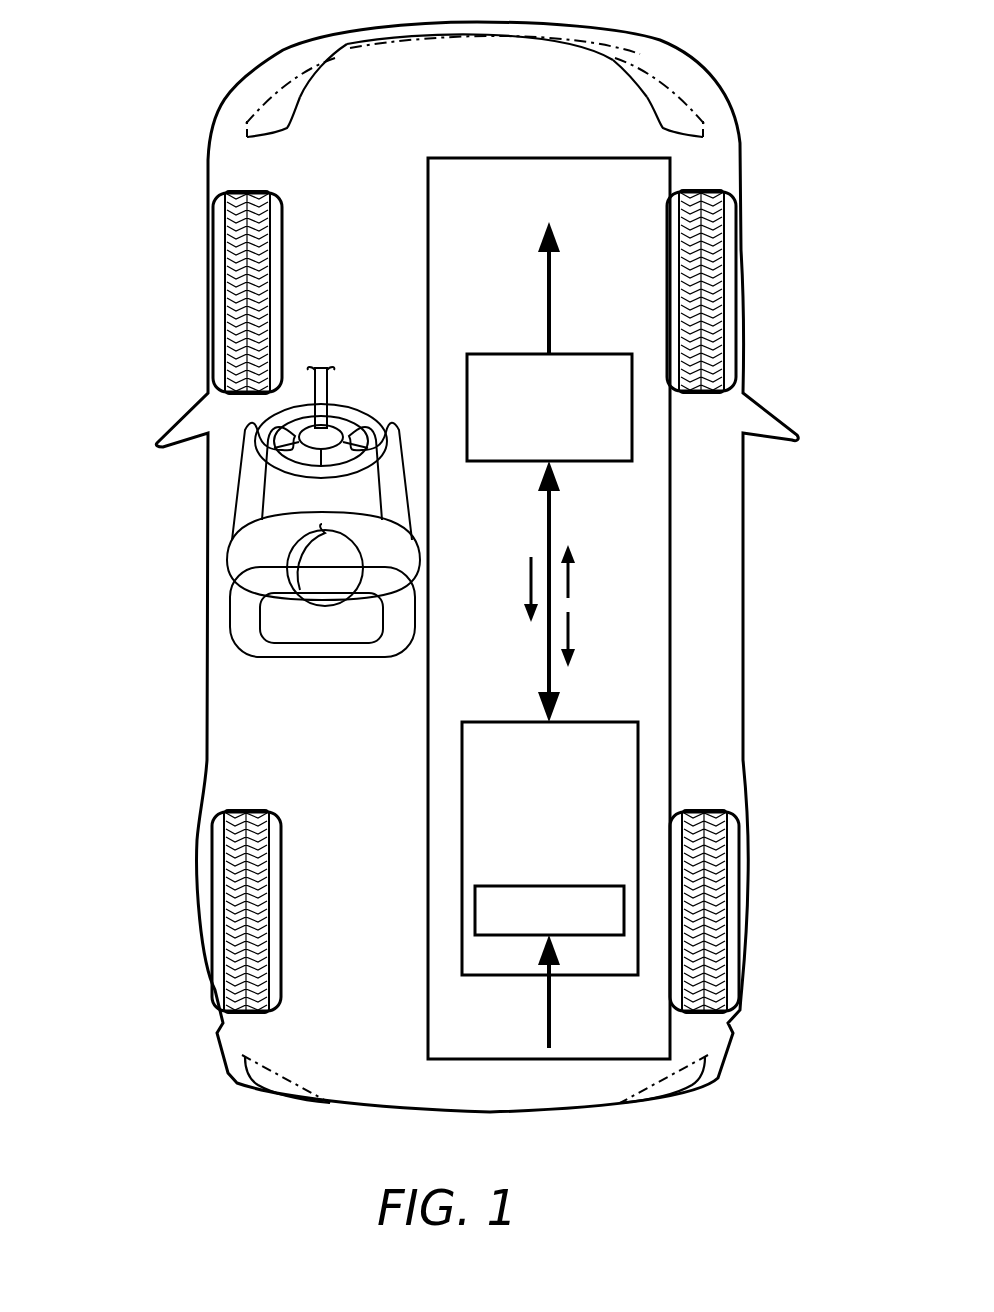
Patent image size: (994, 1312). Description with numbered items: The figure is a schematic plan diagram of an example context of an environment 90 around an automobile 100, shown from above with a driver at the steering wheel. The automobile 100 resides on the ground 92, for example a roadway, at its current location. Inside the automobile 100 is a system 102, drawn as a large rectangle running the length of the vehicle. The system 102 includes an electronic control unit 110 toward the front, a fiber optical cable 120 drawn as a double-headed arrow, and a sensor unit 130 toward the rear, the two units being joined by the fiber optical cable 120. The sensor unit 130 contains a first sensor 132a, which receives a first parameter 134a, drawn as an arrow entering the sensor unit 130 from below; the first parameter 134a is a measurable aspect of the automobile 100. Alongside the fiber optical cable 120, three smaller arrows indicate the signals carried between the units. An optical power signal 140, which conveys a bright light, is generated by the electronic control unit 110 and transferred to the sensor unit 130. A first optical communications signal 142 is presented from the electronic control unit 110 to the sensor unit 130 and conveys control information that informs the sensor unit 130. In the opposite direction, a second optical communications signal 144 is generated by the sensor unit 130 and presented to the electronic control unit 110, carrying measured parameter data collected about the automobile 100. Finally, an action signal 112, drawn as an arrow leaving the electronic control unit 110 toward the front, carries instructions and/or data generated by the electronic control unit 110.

The environment 90 is at (195, 76).
The automobile 100 is at (206, 194).
The ground 92 is at (146, 552).
The system 102 is at (543, 158).
The electronic control unit 110 is at (503, 354).
The action signal 112 is at (551, 288).
The fiber optical cable 120 is at (551, 528).
The sensor unit 130 is at (508, 722).
The first sensor 132a is at (552, 886).
The first parameter 134a is at (551, 1020).
The optical power signal 140 is at (521, 593).
The first optical communications signal 142 is at (618, 642).
The second optical communications signal 144 is at (618, 590).